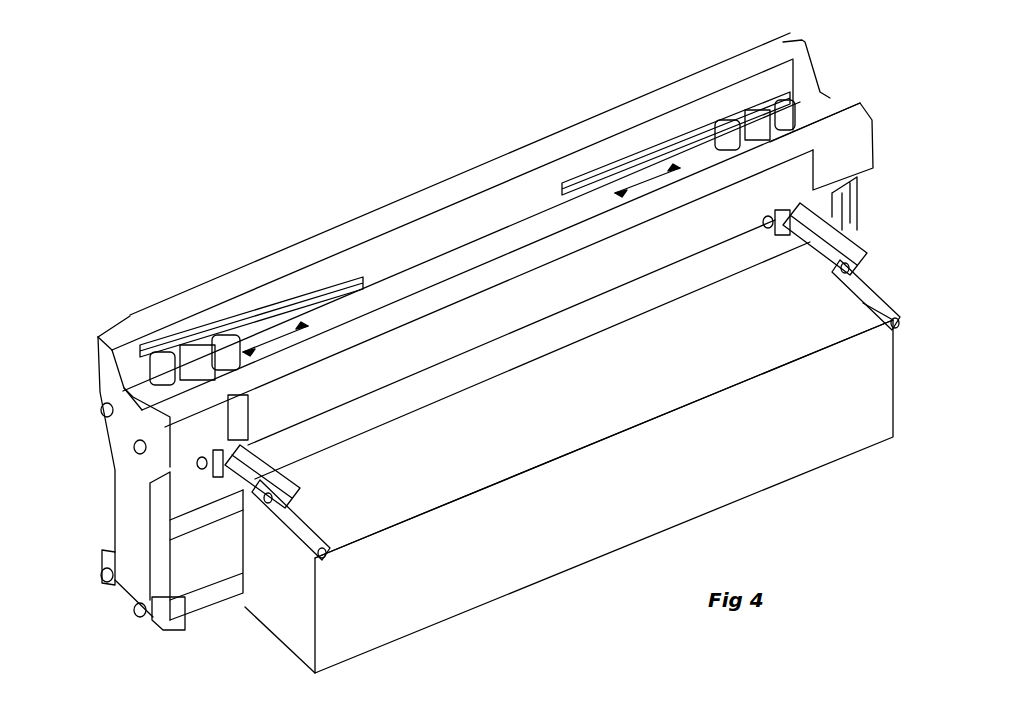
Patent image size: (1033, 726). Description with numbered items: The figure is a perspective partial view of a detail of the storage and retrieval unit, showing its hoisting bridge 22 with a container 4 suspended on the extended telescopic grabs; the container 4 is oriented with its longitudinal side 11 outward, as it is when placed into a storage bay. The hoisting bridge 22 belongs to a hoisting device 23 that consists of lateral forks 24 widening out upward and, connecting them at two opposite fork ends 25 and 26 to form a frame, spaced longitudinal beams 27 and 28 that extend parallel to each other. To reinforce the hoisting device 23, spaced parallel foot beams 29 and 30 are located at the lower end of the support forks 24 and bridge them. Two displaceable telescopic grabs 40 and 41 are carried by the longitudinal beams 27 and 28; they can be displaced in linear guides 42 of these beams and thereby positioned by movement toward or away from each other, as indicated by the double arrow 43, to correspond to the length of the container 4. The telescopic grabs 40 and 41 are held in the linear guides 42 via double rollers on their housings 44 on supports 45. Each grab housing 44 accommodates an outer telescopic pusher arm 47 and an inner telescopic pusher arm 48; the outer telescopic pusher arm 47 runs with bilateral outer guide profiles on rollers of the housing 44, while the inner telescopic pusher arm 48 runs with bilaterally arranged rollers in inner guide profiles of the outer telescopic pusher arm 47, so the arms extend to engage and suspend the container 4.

The container 4 is at (598, 507).
The longitudinal side 11 is at (840, 455).
The hoisting bridge 22 is at (390, 204).
The hoisting device 23 is at (412, 172).
The lateral fork 24 is at (128, 497).
The fork end 25 is at (97, 338).
The fork end 26 is at (165, 413).
The longitudinal beam 27 is at (470, 178).
The longitudinal beam 28 is at (535, 295).
The foot beam 29 is at (205, 520).
The foot beam 30 is at (222, 600).
The telescopic grab 40 is at (205, 470).
The telescopic grab 41 is at (775, 240).
The linear guide 42 is at (363, 283).
The double arrow 43 is at (290, 350).
The housing 44 is at (195, 345).
The support 45 is at (160, 355).
The outer telescopic pusher arm 47 is at (285, 478).
The inner telescopic pusher arm 48 is at (310, 515).